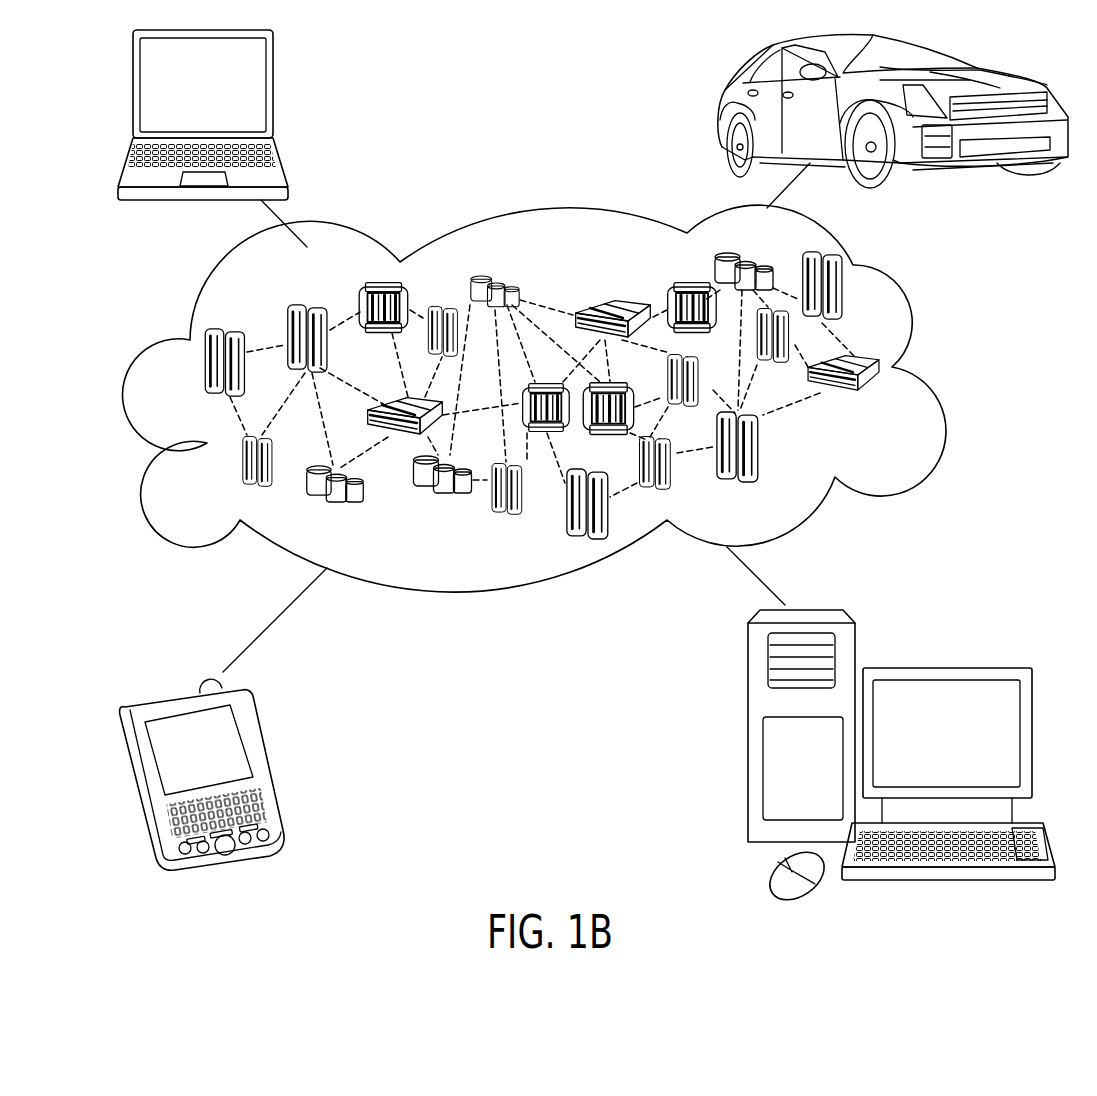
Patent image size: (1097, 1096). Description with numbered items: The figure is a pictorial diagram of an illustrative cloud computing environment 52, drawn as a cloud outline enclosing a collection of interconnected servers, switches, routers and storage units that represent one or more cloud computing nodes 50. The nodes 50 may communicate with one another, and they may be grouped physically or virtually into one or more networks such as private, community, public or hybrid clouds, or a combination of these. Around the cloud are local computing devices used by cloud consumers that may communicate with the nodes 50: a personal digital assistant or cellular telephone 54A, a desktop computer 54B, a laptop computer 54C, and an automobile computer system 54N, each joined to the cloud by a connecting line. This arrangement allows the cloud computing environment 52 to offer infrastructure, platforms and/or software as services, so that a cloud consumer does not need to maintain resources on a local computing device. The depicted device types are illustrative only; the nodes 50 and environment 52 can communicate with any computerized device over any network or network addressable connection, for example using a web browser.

The cloud computing nodes 50 is at (952, 275).
The cloud computing environment 52 is at (943, 375).
The personal digital assistant or cellular telephone 54A is at (262, 763).
The desktop computer 54B is at (942, 668).
The laptop computer 54C is at (275, 92).
The automobile computer system 54N is at (722, 111).